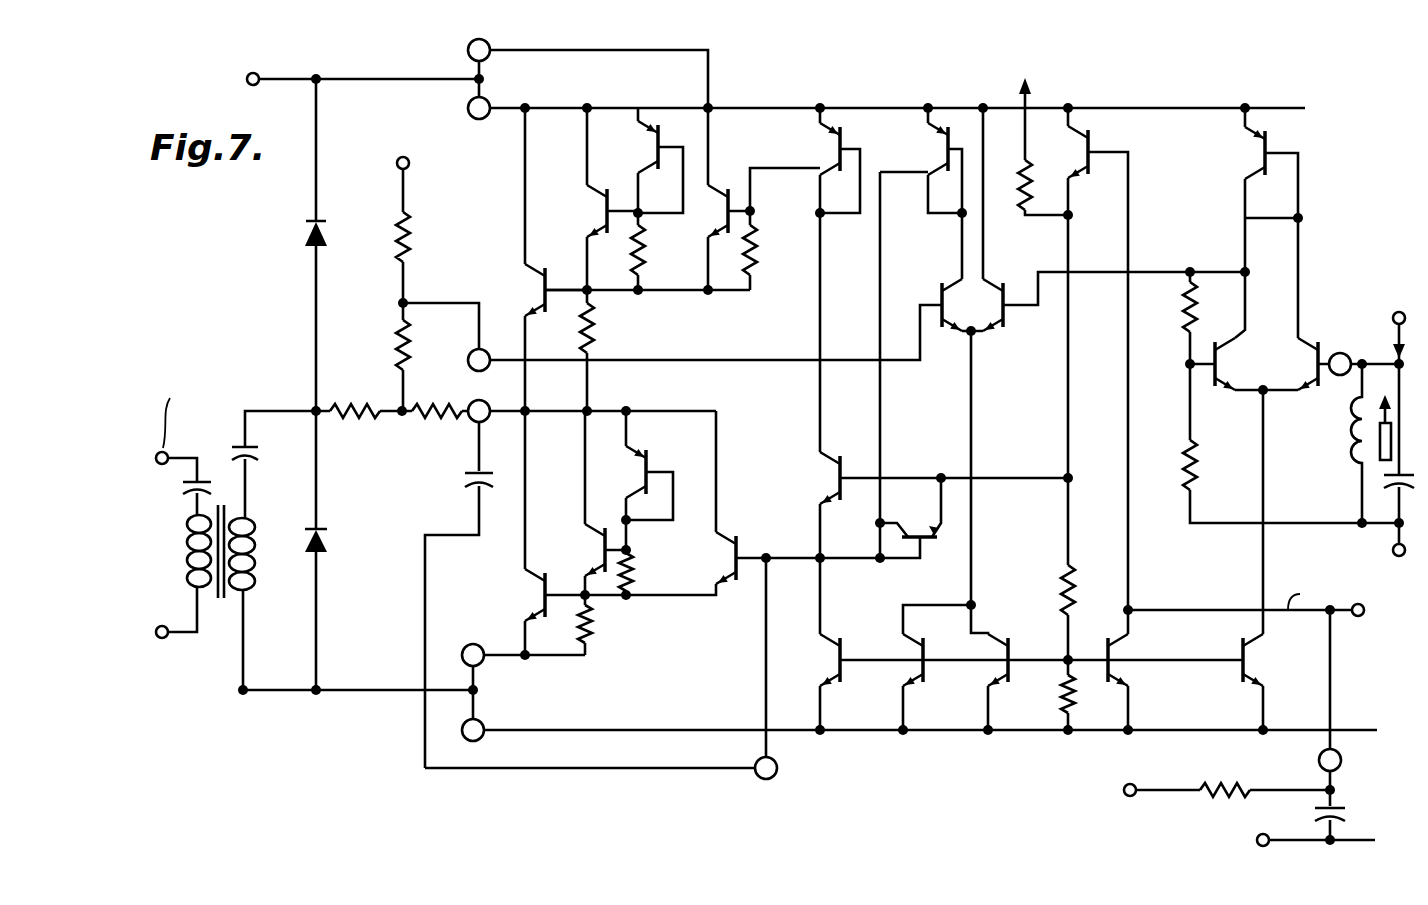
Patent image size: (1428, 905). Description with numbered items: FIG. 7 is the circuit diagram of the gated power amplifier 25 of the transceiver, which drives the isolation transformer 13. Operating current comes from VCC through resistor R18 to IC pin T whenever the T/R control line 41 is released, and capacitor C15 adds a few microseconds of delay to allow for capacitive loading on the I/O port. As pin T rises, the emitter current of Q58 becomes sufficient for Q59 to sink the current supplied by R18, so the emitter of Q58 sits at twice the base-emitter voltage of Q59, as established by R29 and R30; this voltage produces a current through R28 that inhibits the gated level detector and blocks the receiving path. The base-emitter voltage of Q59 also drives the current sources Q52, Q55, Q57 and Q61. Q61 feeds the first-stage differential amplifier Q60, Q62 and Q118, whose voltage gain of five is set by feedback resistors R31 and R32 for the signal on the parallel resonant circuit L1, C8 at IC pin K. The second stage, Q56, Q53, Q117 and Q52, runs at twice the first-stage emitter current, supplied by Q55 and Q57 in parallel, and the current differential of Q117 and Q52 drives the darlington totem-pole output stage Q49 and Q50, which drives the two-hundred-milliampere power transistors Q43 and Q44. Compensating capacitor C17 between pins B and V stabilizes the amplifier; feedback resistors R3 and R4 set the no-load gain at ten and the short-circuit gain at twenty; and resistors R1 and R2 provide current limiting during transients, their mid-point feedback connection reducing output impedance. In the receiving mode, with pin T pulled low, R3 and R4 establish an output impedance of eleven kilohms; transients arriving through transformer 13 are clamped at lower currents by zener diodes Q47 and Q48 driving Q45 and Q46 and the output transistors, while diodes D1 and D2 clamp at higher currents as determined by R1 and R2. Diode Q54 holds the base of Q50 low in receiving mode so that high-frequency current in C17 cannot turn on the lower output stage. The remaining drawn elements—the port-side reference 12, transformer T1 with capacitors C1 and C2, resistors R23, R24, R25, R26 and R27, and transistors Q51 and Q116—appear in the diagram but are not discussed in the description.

The gated power amplifier 25 is at (783, 446).
The broadband I/O port 12 is at (209, 521).
The isolation transformer 13 is at (254, 604).
The T/R control line 41 is at (1243, 661).
The transformer T1 is at (193, 551).
The capacitor C1 is at (189, 486).
The capacitor C2 is at (270, 464).
The capacitor C8 is at (1389, 443).
The capacitor C15 is at (1307, 812).
The compensating capacitor C17 is at (453, 595).
The diode D1 is at (302, 245).
The diode D2 is at (332, 550).
The inductor L1 is at (1339, 443).
The current limiting resistor R1 is at (359, 424).
The current limiting resistor R2 is at (435, 424).
The feedback resistor R3 is at (422, 357).
The feedback resistor R4 is at (422, 236).
The resistor R18 is at (1206, 780).
The resistor R23 is at (611, 350).
The resistor R24 is at (608, 625).
The resistor R25 is at (646, 574).
The resistor R26 is at (661, 257).
The resistor R27 is at (773, 250).
The resistor R28 is at (1030, 179).
The resistor R29 is at (1044, 569).
The resistor R30 is at (1042, 695).
The feedback resistor R31 is at (1167, 318).
The feedback resistor R32 is at (1291, 443).
The power transistor Q43 is at (542, 259).
The power transistor Q44 is at (557, 533).
The transistor Q45 is at (595, 199).
The transistor Q46 is at (589, 503).
The zener diode Q47 is at (634, 482).
The zener diode Q48 is at (645, 166).
The darlington output stage transistor Q49 is at (718, 199).
The darlington output stage transistor Q50 is at (696, 503).
The transistor Q51 is at (930, 505).
The current source transistor Q52 is at (810, 644).
The second stage amplifier transistor Q53 is at (937, 297).
The diode Q54 is at (910, 507).
The current source transistor Q55 is at (912, 667).
The second stage amplifier transistor Q56 is at (1108, 219).
The current source transistor Q57 is at (973, 667).
The transistor Q58 is at (1085, 359).
The transistor Q59 is at (1142, 670).
The first stage differential amplifier transistor Q60 is at (1226, 379).
The current source transistor Q61 is at (1267, 682).
The first stage differential amplifier transistor Q62 is at (1296, 379).
The transistor Q116 is at (805, 160).
The second stage amplifier transistor Q117 is at (921, 160).
The first stage differential amplifier transistor Q118 is at (1257, 223).